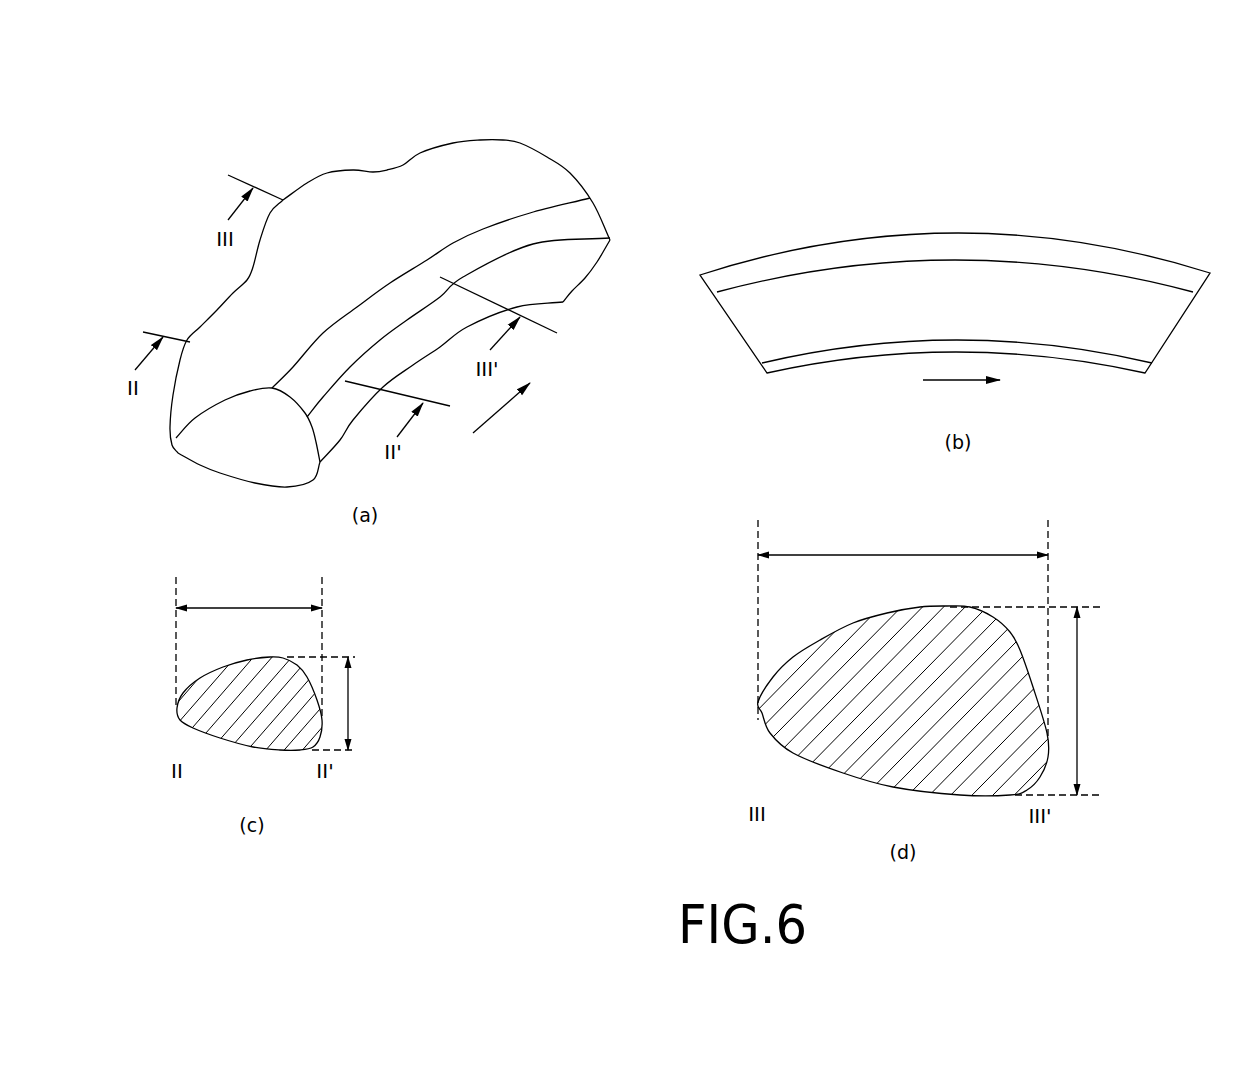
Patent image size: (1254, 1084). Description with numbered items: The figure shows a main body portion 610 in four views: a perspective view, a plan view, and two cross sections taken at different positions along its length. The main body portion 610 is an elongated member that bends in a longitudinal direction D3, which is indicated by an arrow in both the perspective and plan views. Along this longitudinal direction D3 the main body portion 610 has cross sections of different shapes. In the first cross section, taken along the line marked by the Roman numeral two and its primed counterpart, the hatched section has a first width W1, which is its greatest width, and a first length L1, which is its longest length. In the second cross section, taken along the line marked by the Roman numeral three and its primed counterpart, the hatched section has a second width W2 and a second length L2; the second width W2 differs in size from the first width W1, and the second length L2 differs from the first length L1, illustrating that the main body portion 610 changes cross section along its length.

The main body portion 610 is at (525, 137).
The longitudinal direction D3 is at (501, 411).
The first width W1 is at (249, 593).
The first length L1 is at (361, 703).
The second width W2 is at (903, 541).
The second length L2 is at (1090, 701).